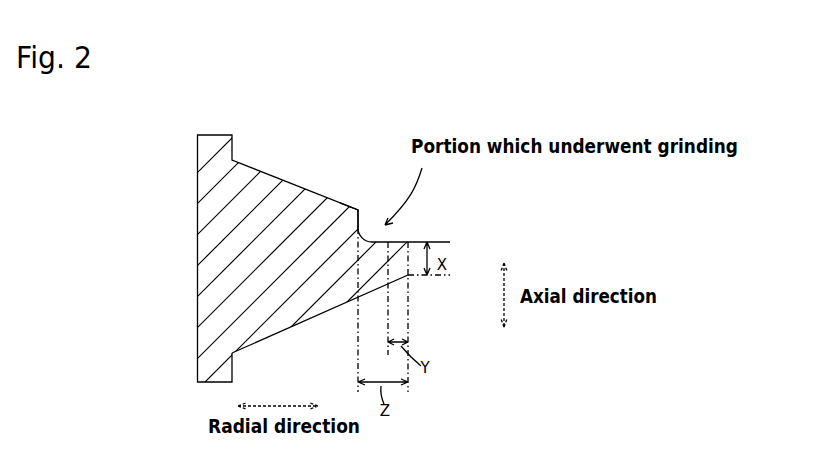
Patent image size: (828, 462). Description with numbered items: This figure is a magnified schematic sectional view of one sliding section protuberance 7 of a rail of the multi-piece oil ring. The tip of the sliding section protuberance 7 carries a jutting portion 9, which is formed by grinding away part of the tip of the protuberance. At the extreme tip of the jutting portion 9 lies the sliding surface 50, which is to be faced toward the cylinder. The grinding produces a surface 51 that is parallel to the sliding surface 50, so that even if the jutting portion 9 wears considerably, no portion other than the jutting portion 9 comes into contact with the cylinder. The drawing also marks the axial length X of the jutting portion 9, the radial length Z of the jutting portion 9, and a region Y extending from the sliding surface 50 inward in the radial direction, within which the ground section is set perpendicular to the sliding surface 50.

The sliding section protuberance 7 is at (288, 215).
The surface 51 is at (361, 222).
The jutting portion 9 is at (397, 242).
The sliding surface 50 is at (410, 276).